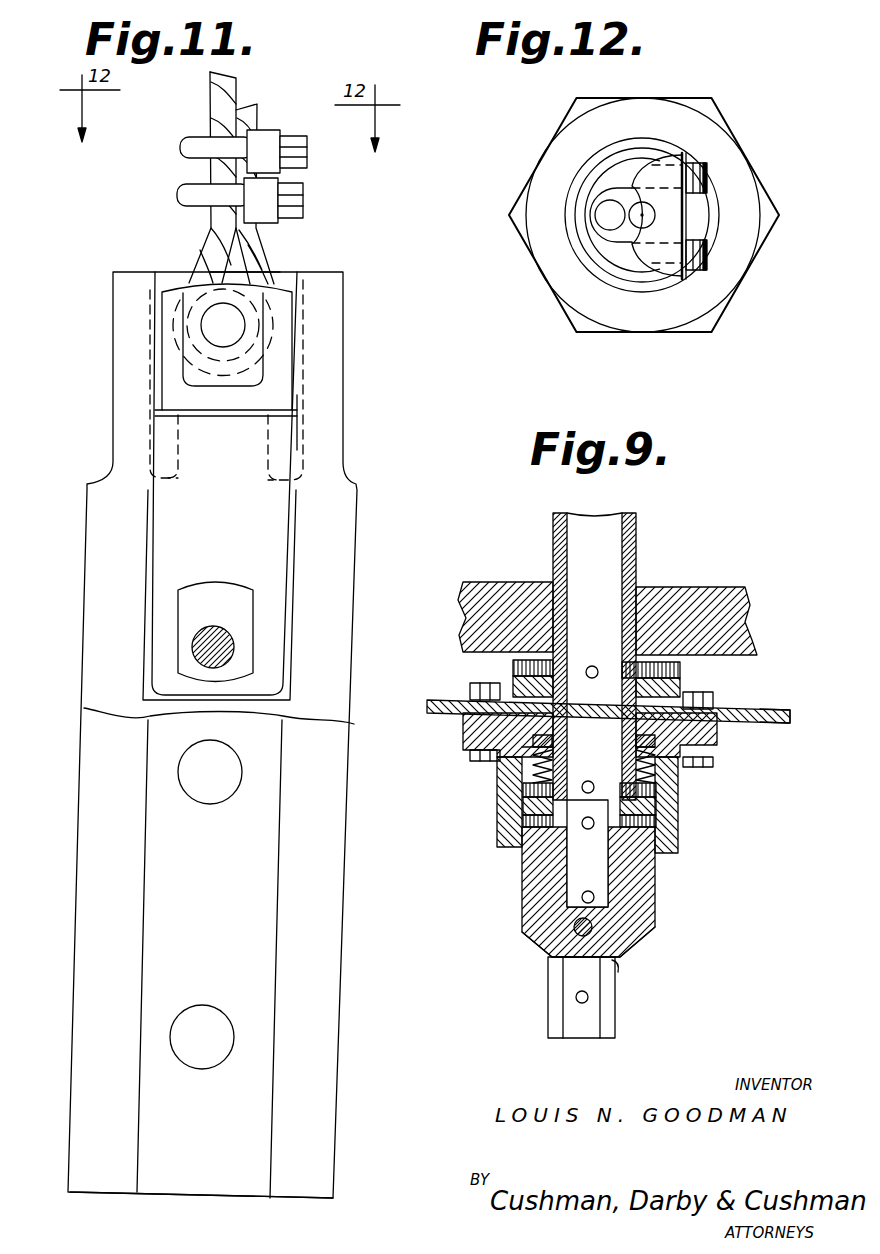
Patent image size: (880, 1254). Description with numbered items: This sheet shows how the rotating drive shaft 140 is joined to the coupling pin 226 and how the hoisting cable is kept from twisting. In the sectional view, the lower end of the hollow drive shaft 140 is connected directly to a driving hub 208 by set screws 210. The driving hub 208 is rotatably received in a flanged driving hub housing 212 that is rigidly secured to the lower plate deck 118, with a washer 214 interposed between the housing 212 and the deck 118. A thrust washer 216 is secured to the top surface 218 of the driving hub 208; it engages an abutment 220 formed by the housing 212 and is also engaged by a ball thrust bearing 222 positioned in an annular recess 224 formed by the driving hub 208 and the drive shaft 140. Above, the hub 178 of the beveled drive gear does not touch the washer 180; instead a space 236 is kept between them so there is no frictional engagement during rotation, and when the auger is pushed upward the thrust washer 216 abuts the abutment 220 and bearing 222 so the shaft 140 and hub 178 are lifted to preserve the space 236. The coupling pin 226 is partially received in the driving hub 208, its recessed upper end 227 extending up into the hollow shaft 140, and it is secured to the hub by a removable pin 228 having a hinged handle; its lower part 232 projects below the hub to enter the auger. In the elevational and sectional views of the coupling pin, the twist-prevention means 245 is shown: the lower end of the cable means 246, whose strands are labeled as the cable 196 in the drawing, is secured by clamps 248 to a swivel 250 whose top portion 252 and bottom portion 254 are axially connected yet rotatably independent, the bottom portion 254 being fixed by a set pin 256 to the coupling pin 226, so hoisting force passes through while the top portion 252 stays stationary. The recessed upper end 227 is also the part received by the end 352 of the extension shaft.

In FIG. 9, the lower plate deck 118 is at (781, 727).
In FIG. 9, the drive shaft 140 is at (637, 555).
In FIG. 9, the hub 178 is at (676, 668).
In FIG. 9, the washer 180 is at (720, 709).
In FIG. 11, the wire leads 196 is at (209, 95).
In FIG. 12, the wire leads 196 is at (605, 222).
In FIG. 9, the driving hub 208 is at (647, 900).
In FIG. 9, the set screws 210 is at (667, 832).
In FIG. 9, the flanged driving hub housing 212 is at (673, 800).
In FIG. 9, the washer 214 is at (778, 728).
In FIG. 9, the thrust washer 216 is at (530, 752).
In FIG. 9, the top surface 218 is at (530, 813).
In FIG. 9, the abutment 220 is at (523, 758).
In FIG. 9, the ball thrust bearing 222 is at (545, 762).
In FIG. 9, the annular recess 224 is at (540, 752).
In FIG. 11, the coupling pin 226 is at (343, 950).
In FIG. 12, the coupling pin 226 is at (707, 320).
In FIG. 9, the coupling pin 226 is at (618, 972).
In FIG. 11, the upper end 227 is at (112, 366).
In FIG. 9, the upper end 227 is at (557, 833).
In FIG. 9, the pin 228 is at (576, 935).
In FIG. 11, the lower part 232 is at (328, 1042).
In FIG. 9, the lower part 232 is at (613, 1012).
In FIG. 9, the space 236 is at (692, 692).
In FIG. 11, the means for preventing twisting 245 is at (288, 278).
In FIG. 11, the cable means 246 is at (255, 109).
In FIG. 11, the clamps 248 is at (178, 200).
In FIG. 12, the clamps 248 is at (593, 190).
In FIG. 11, the swivel 250 is at (293, 402).
In FIG. 11, the top portion 252 is at (287, 355).
In FIG. 11, the bottom portion 254 is at (263, 530).
In FIG. 11, the set pin 256 is at (215, 647).
In FIG. 12, the end 352 is at (717, 205).